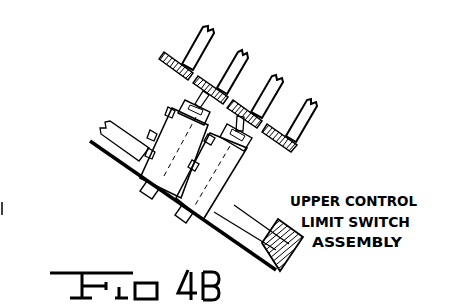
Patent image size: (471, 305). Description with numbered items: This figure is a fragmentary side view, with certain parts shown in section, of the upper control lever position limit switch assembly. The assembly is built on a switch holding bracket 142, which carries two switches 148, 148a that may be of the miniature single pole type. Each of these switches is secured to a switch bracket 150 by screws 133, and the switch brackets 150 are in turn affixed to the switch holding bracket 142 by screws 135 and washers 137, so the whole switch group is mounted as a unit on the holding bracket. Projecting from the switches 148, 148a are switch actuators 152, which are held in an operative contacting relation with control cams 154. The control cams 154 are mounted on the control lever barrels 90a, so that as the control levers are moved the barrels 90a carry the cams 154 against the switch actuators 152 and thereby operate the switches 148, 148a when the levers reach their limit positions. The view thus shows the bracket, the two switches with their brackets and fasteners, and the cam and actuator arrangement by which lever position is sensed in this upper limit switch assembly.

The control lever barrels 90a is at (248, 64).
The screws 133 is at (165, 107).
The screws 135 is at (106, 215).
The washers 137 is at (178, 214).
The switch holding bracket 142 is at (100, 126).
The switch 148 is at (140, 174).
The switch 148a is at (205, 192).
The switch brackets 150 is at (172, 110).
The switch actuators 152 is at (266, 160).
The control cams 154 is at (203, 84).